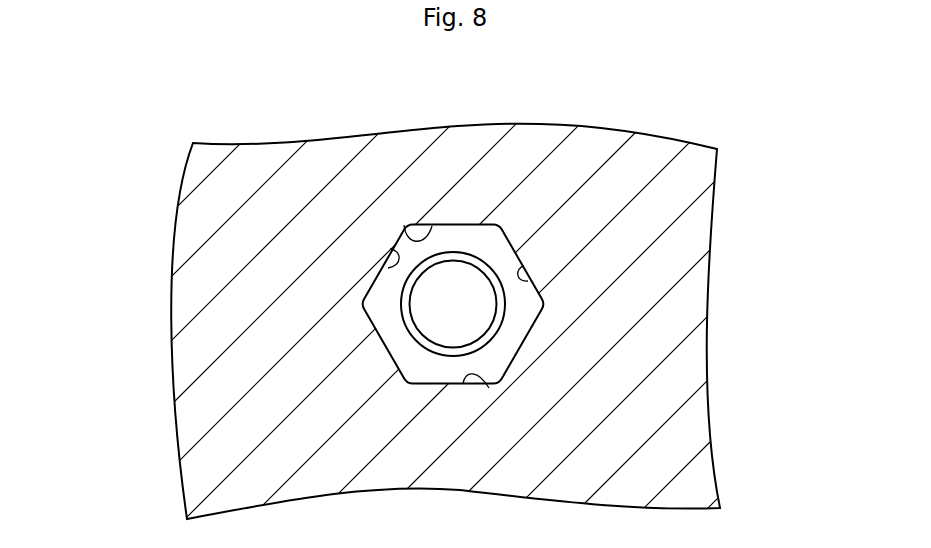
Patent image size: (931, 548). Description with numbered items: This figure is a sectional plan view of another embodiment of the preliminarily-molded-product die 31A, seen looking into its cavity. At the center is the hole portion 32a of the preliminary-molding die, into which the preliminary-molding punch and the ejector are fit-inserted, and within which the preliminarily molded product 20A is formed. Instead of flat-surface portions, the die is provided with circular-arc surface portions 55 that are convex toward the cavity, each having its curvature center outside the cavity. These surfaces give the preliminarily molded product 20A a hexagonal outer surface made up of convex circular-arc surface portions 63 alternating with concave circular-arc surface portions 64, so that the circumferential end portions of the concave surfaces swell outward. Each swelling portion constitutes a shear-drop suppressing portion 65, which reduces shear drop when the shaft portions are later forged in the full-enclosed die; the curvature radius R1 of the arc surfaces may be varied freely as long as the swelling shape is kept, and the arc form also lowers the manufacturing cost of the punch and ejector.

The preliminarily-molded-product die 31A is at (708, 311).
The preliminarily molded product 20A is at (450, 236).
The hole portion 32a is at (424, 227).
The convex circular-arc surface portions 63 is at (470, 224).
The circular-arc surface portions 55 is at (398, 240).
The concave circular-arc surface portions 64 is at (374, 282).
The shear-drop suppressing portion 65 is at (400, 232).
The curvature radius R1 is at (633, 260).